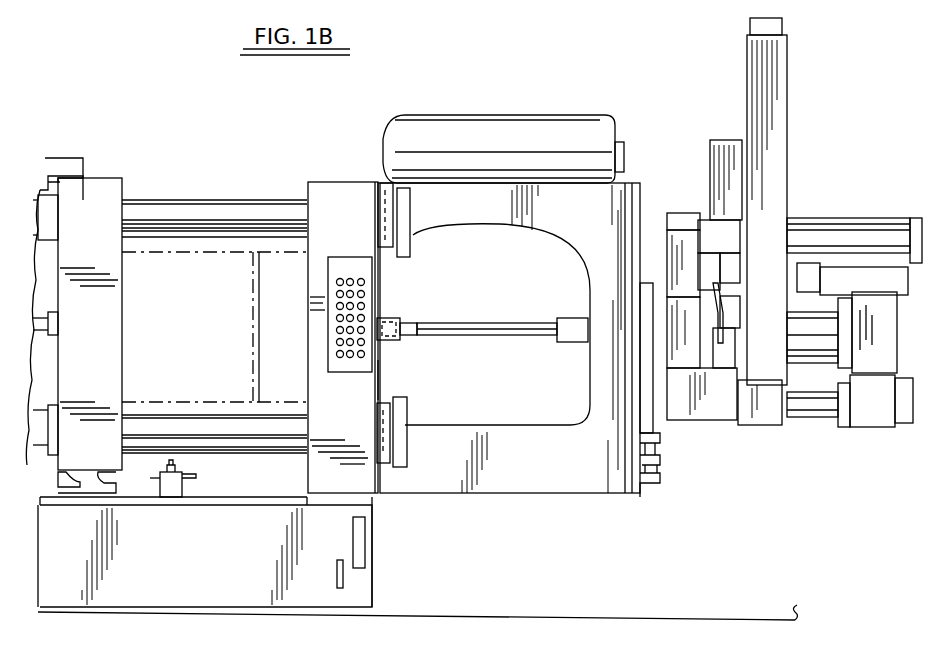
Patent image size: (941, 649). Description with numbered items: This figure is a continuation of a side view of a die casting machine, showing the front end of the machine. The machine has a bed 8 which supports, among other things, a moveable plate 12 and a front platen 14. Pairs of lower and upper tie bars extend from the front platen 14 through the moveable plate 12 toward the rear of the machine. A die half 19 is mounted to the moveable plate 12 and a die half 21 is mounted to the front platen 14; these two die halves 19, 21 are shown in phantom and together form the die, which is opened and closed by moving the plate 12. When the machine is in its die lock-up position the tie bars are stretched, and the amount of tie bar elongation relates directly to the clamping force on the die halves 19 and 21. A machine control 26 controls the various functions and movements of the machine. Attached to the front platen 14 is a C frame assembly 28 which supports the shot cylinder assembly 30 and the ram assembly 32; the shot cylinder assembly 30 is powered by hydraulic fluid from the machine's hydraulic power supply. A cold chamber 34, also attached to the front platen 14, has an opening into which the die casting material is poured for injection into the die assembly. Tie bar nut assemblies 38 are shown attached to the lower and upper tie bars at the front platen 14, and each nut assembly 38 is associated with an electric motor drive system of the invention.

The bed 8 is at (214, 528).
The moveable plate 12 is at (105, 192).
The front platen 14 is at (367, 385).
The die half 19 is at (211, 263).
The die half 21 is at (281, 263).
The machine control 26 is at (356, 267).
The C frame assembly 28 is at (602, 208).
The shot cylinder assembly 30 is at (804, 305).
The ram assembly 32 is at (485, 327).
The cold chamber 34 is at (387, 318).
The tie bar nut assemblies 38 is at (400, 218).